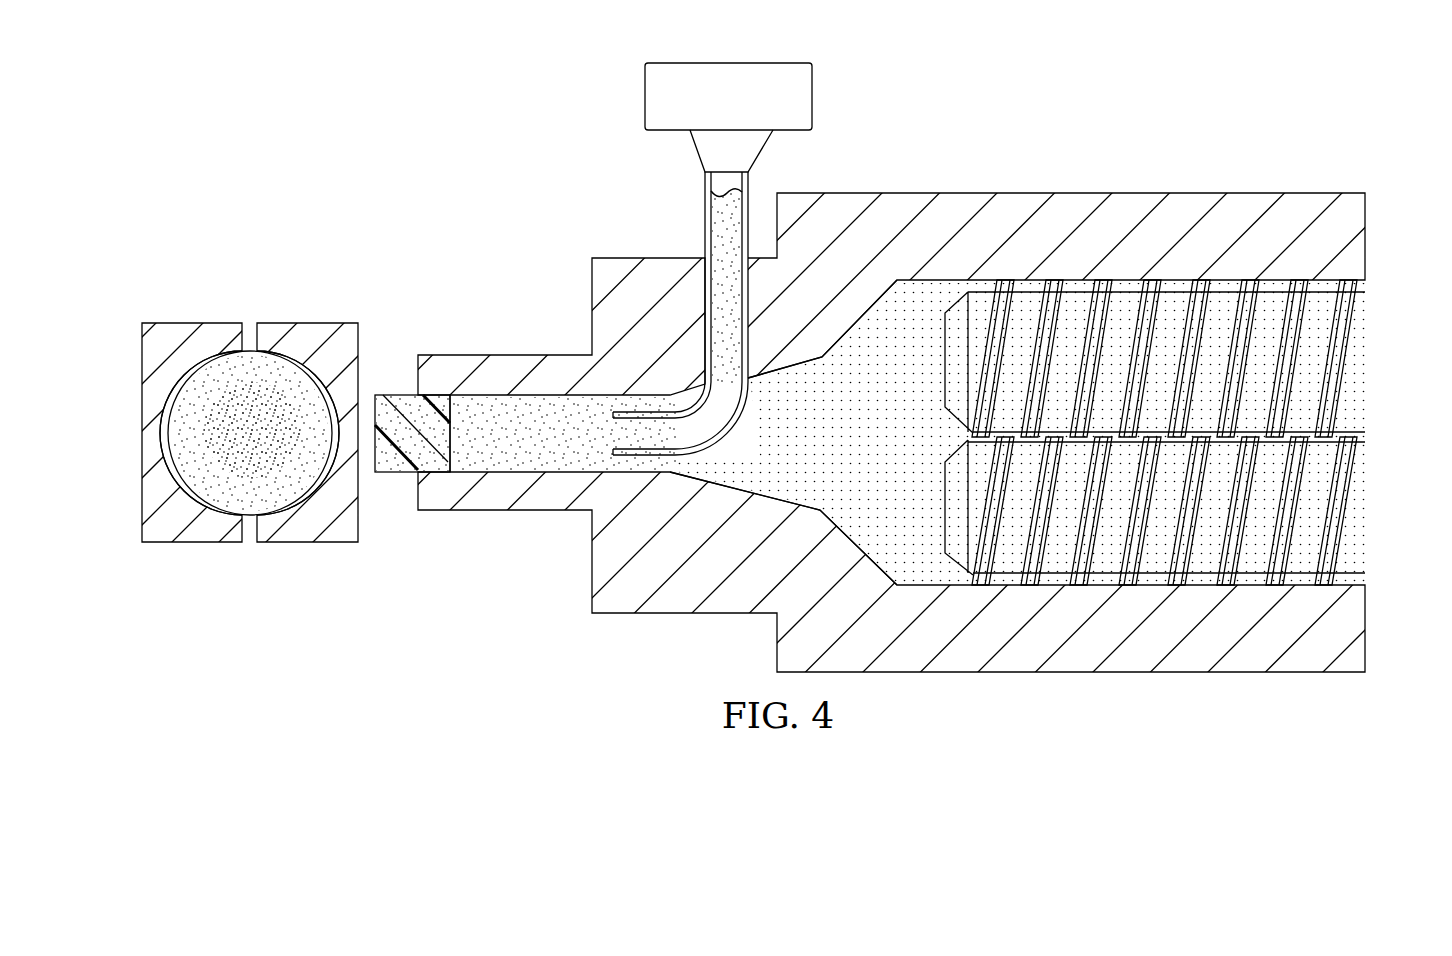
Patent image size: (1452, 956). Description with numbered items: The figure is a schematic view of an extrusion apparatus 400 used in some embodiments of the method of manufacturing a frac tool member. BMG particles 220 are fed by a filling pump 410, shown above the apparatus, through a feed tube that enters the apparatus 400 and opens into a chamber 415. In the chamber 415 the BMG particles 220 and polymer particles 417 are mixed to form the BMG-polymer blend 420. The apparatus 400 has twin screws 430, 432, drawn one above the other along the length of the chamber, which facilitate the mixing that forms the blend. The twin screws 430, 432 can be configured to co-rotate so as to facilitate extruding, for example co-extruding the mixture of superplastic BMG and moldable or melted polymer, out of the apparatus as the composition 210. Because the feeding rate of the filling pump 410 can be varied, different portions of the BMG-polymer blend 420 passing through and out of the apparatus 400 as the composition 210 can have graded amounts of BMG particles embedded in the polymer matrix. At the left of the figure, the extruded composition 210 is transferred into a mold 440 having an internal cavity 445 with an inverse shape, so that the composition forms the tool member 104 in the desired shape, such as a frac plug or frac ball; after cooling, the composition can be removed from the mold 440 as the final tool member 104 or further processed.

The apparatus 400 is at (1131, 79).
The filling pump 410 is at (645, 95).
The chamber 415 is at (781, 500).
The polymer particles 417 is at (812, 449).
The BMG-polymer blend 420 is at (515, 464).
The twin screw 430 is at (1355, 358).
The twin screw 432 is at (1355, 508).
The BMG particles 220 is at (723, 229).
The composition 210 is at (395, 463).
The tool member 104 is at (166, 439).
The mold 440 is at (147, 497).
The internal cavity 445 is at (217, 490).